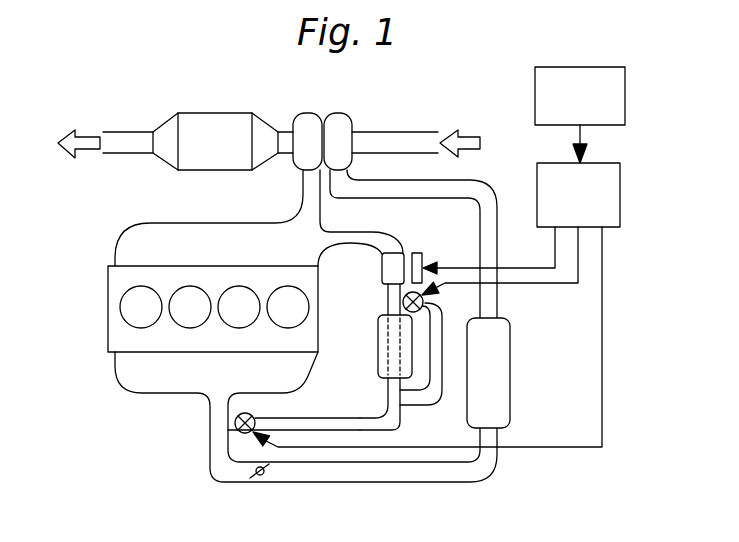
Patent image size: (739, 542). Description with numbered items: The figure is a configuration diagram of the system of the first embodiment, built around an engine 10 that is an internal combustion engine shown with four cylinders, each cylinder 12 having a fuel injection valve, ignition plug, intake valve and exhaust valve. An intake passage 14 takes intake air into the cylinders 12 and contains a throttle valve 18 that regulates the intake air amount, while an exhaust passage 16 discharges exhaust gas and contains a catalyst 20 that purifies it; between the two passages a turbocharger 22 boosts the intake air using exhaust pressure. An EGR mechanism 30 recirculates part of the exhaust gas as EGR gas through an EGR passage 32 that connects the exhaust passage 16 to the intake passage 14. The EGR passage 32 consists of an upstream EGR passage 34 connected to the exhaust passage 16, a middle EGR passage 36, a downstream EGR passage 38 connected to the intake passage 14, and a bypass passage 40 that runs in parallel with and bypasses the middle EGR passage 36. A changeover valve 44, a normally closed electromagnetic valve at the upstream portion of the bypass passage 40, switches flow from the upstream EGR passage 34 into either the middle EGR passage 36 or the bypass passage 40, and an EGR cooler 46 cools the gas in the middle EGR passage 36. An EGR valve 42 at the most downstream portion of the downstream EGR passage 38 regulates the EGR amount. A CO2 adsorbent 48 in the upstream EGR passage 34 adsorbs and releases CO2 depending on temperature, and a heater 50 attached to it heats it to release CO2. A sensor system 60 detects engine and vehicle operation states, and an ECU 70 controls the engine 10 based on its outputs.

The engine 10 is at (116, 381).
The cylinder 12 is at (128, 309).
The intake passage 14 is at (418, 484).
The exhaust passage 16 is at (303, 197).
The throttle valve 18 is at (262, 480).
The catalyst 20 is at (222, 117).
The turbocharger 22 is at (330, 115).
The EGR mechanism 30 is at (446, 384).
The EGR passage 32 is at (396, 424).
The upstream EGR passage 34 is at (358, 232).
The middle EGR passage 36 is at (388, 345).
The downstream EGR passage 38 is at (320, 420).
The bypass passage 40 is at (442, 348).
The EGR valve 42 is at (245, 433).
The changeover valve 44 is at (430, 298).
The EGR cooler 46 is at (378, 330).
The CO2 adsorbent 48 is at (382, 270).
The heater 50 is at (422, 251).
The sensor system 60 is at (582, 65).
The ECU 70 is at (620, 195).